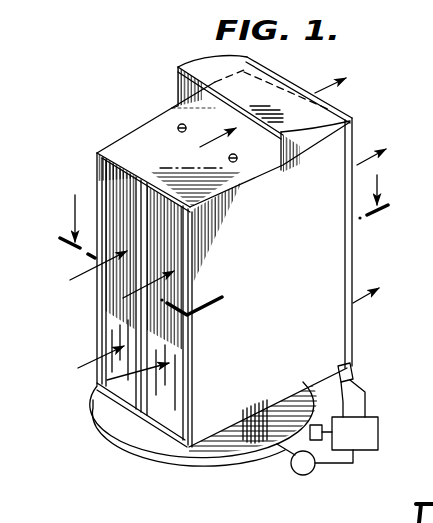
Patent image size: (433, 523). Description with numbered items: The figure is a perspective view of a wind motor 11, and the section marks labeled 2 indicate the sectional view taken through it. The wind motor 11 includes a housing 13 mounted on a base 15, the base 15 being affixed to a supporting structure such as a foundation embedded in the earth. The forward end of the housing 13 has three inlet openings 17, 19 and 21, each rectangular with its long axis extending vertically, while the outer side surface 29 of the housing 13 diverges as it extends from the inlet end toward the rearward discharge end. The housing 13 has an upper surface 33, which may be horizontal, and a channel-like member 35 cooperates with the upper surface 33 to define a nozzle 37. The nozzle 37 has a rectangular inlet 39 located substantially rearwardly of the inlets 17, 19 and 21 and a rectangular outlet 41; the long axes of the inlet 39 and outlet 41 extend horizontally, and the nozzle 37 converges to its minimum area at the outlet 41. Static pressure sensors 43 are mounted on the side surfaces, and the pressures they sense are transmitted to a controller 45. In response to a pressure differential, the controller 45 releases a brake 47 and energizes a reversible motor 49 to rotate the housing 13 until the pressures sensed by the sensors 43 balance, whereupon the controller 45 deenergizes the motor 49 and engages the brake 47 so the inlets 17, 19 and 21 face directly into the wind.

The wind motor 11 is at (134, 78).
The housing 13 is at (139, 153).
The base 15 is at (133, 441).
The inlet opening 17 is at (170, 336).
The inlet opening 19 is at (140, 400).
The inlet opening 21 is at (120, 323).
The outer side surface 29 is at (300, 258).
The upper surface 33 is at (152, 132).
The channel-like member 35 is at (220, 63).
The nozzle 37 is at (212, 107).
The rectangular inlet 39 is at (218, 80).
The rectangular outlet 41 is at (335, 108).
The static pressure sensor 43 is at (352, 373).
The controller 45 is at (360, 428).
The brake 47 is at (318, 440).
The reversible motor 49 is at (292, 472).
The section line 2- 2 is at (223, 236).